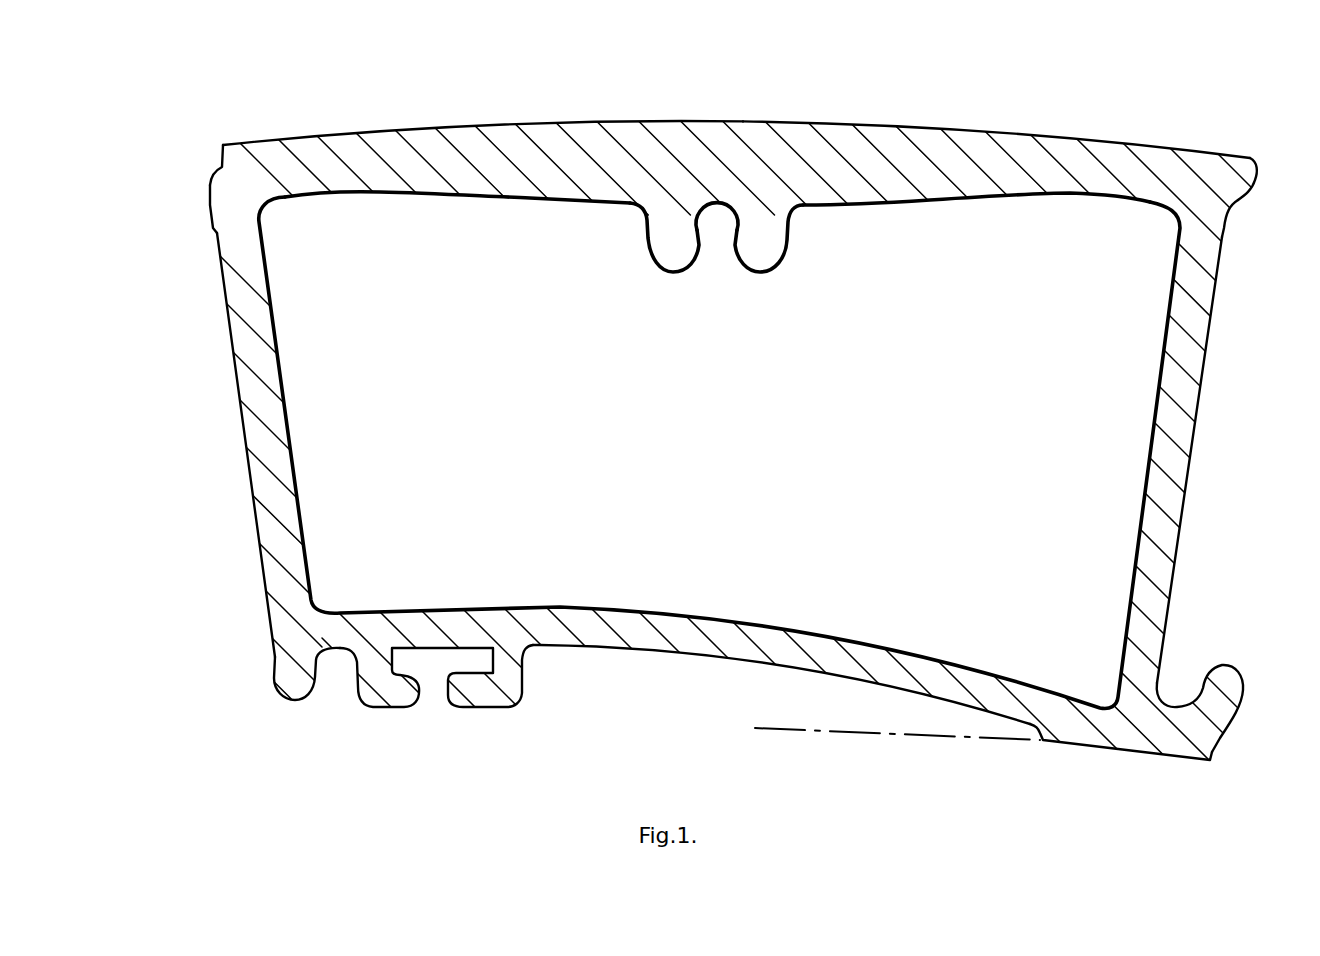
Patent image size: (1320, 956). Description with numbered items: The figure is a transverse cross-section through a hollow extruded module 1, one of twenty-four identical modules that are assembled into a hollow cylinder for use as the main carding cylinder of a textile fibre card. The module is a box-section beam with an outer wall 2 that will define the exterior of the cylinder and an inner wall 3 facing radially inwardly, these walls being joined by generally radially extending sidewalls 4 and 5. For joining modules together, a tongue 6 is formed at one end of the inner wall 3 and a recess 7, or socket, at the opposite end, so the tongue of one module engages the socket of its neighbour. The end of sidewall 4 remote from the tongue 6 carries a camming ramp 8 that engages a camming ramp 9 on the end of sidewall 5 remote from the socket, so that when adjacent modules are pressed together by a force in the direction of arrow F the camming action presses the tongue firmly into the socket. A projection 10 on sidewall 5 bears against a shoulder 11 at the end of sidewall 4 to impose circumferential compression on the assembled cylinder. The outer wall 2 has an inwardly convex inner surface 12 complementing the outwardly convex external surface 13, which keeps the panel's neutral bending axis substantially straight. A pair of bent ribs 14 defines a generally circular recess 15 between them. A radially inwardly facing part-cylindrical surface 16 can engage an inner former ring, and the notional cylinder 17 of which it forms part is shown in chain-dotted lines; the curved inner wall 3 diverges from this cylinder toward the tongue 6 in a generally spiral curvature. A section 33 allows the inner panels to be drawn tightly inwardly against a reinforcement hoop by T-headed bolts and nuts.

The hollow extruded module 1 is at (393, 132).
The outer wall 2 is at (537, 128).
The inner wall 3 is at (655, 642).
The sidewall 4 is at (257, 433).
The sidewall 5 is at (1187, 422).
The tongue 6 is at (288, 680).
The recess 7 is at (1182, 693).
The camming ramp 8 is at (217, 190).
The camming ramp 9 is at (1222, 237).
The projection 10 is at (1256, 178).
The shoulder 11 is at (220, 175).
The inner surface 12 is at (578, 203).
The outwardly convex surface 13 is at (743, 125).
The bent ribs 14 is at (745, 268).
The circular recess 15 is at (728, 228).
The part-cylindrical surface 16 is at (1143, 752).
The notional cylinder 17 is at (908, 733).
The section 33 is at (442, 663).
The arrow F is at (1191, 477).